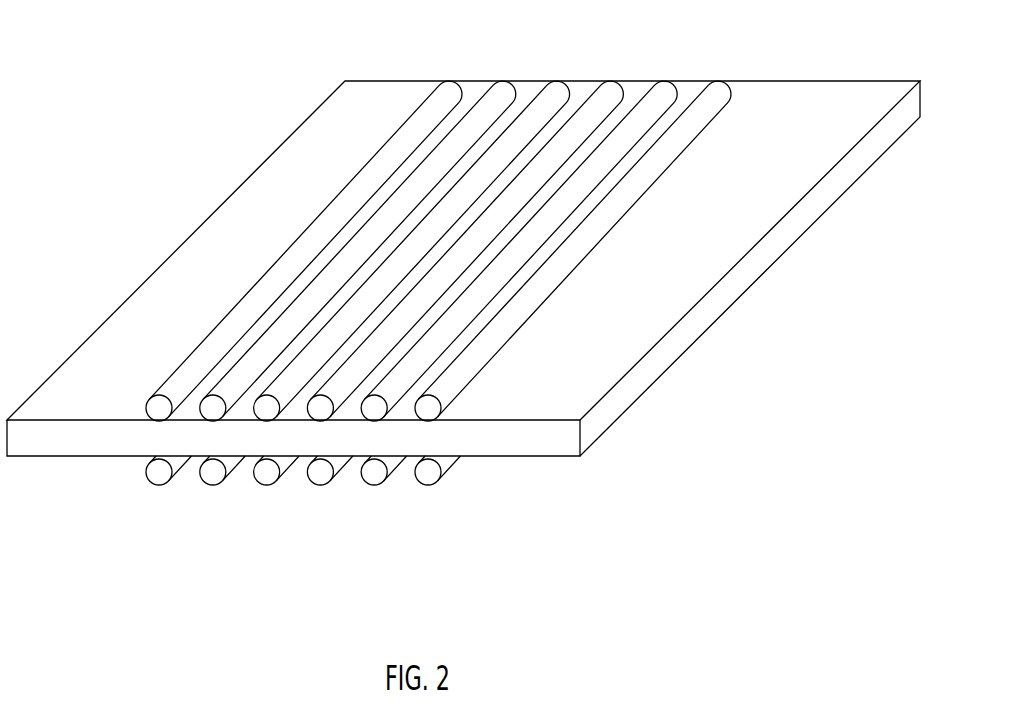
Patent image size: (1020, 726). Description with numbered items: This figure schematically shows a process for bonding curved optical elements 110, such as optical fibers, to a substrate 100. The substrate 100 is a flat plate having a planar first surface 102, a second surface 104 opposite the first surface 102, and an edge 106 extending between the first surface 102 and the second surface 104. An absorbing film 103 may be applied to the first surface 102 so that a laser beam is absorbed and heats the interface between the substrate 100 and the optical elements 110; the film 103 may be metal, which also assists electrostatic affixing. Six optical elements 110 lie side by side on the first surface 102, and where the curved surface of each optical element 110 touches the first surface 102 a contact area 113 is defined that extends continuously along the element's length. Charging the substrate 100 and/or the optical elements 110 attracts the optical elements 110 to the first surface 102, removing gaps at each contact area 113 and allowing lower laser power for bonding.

The substrate 100 is at (222, 150).
The first surface 102 is at (146, 293).
The absorbing film 103 is at (463, 250).
The second surface 104 is at (540, 457).
The edge 106 is at (47, 437).
The curved optical elements 110 is at (731, 68).
The contact area 113 is at (428, 408).